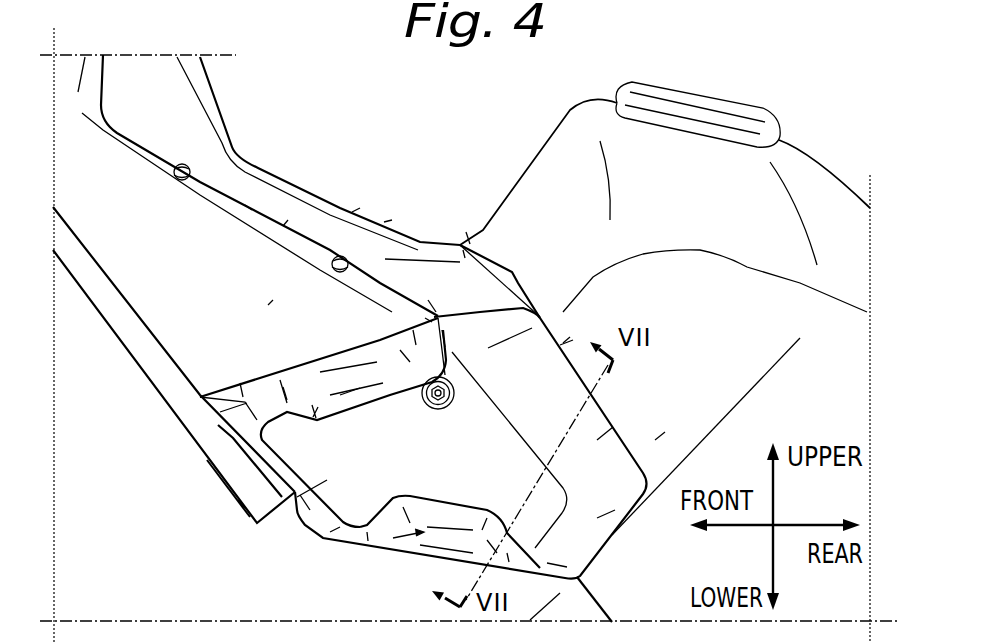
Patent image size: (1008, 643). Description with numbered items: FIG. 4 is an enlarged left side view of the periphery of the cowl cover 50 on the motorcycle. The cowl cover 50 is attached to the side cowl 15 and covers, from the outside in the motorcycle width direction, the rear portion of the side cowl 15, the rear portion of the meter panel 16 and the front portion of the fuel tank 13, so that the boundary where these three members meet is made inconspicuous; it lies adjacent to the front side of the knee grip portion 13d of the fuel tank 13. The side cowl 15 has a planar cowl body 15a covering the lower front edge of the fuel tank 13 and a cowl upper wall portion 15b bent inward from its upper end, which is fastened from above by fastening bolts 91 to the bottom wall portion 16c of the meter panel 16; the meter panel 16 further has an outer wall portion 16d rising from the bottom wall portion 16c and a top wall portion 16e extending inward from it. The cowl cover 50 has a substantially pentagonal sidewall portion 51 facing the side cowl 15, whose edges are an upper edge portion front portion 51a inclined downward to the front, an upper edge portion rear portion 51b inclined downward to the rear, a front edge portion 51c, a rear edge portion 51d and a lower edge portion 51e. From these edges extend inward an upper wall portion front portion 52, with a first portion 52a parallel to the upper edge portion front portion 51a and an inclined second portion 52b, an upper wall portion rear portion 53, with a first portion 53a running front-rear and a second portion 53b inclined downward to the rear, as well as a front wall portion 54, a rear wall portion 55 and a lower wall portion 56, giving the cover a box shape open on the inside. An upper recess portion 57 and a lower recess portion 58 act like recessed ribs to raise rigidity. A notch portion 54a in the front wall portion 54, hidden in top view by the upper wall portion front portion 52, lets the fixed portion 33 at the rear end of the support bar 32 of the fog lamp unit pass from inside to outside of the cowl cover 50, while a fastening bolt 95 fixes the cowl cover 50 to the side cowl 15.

The fuel tank 13 is at (525, 170).
The knee grip portion 13d is at (833, 411).
The side cowl 15 is at (197, 243).
The cowl body 15a is at (273, 300).
The cowl upper wall portion 15b is at (247, 200).
The meter panel 16 is at (372, 87).
The bottom wall portion 16c is at (283, 226).
The outer wall portion 16d is at (356, 212).
The top wall portion 16e is at (387, 222).
The support bar 32 is at (200, 445).
The fixed portion 33 is at (255, 490).
The cowl cover 50 is at (657, 440).
The sidewall portion 51 is at (468, 489).
The upper edge portion front portion 51a is at (283, 390).
The upper edge portion rear portion 51b is at (503, 410).
The front edge portion 51c is at (327, 507).
The rear edge portion 51d is at (560, 530).
The lower edge portion 51e is at (357, 528).
The upper wall portion front portion 52 is at (240, 395).
The first portion 52a is at (353, 392).
The second portion 52b is at (430, 320).
The upper wall portion rear portion 53 is at (597, 443).
The first portion 53a is at (477, 312).
The second portion 53b is at (560, 345).
The front wall portion 54 is at (313, 520).
The notch portion 54a is at (273, 465).
The rear wall portion 55 is at (597, 518).
The lower wall portion 56 is at (410, 573).
The upper recess portion 57 is at (287, 410).
The lower recess portion 58 is at (423, 533).
The fastening bolt 91 is at (187, 163).
The fastening bolt 95 is at (430, 310).